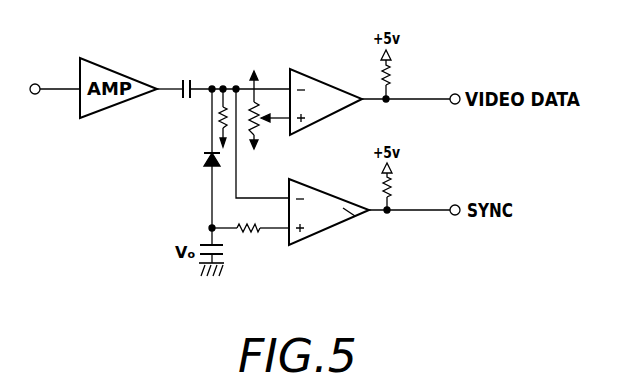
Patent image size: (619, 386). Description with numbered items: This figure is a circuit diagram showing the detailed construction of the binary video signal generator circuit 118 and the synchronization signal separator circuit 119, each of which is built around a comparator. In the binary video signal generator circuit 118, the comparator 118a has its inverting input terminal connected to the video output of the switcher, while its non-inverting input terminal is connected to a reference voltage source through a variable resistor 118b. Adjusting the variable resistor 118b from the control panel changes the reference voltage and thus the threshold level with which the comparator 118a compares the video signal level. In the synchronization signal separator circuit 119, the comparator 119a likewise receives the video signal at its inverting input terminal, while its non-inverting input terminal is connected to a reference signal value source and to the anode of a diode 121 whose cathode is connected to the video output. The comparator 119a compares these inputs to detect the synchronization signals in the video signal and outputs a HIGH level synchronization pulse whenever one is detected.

The binary video signal generator circuit 118 is at (328, 81).
The comparator 118a is at (298, 78).
The variable resistor 118b is at (252, 105).
The synchronization signal separator circuit 119 is at (325, 231).
The comparator 119a is at (343, 208).
The diode 121 is at (205, 158).